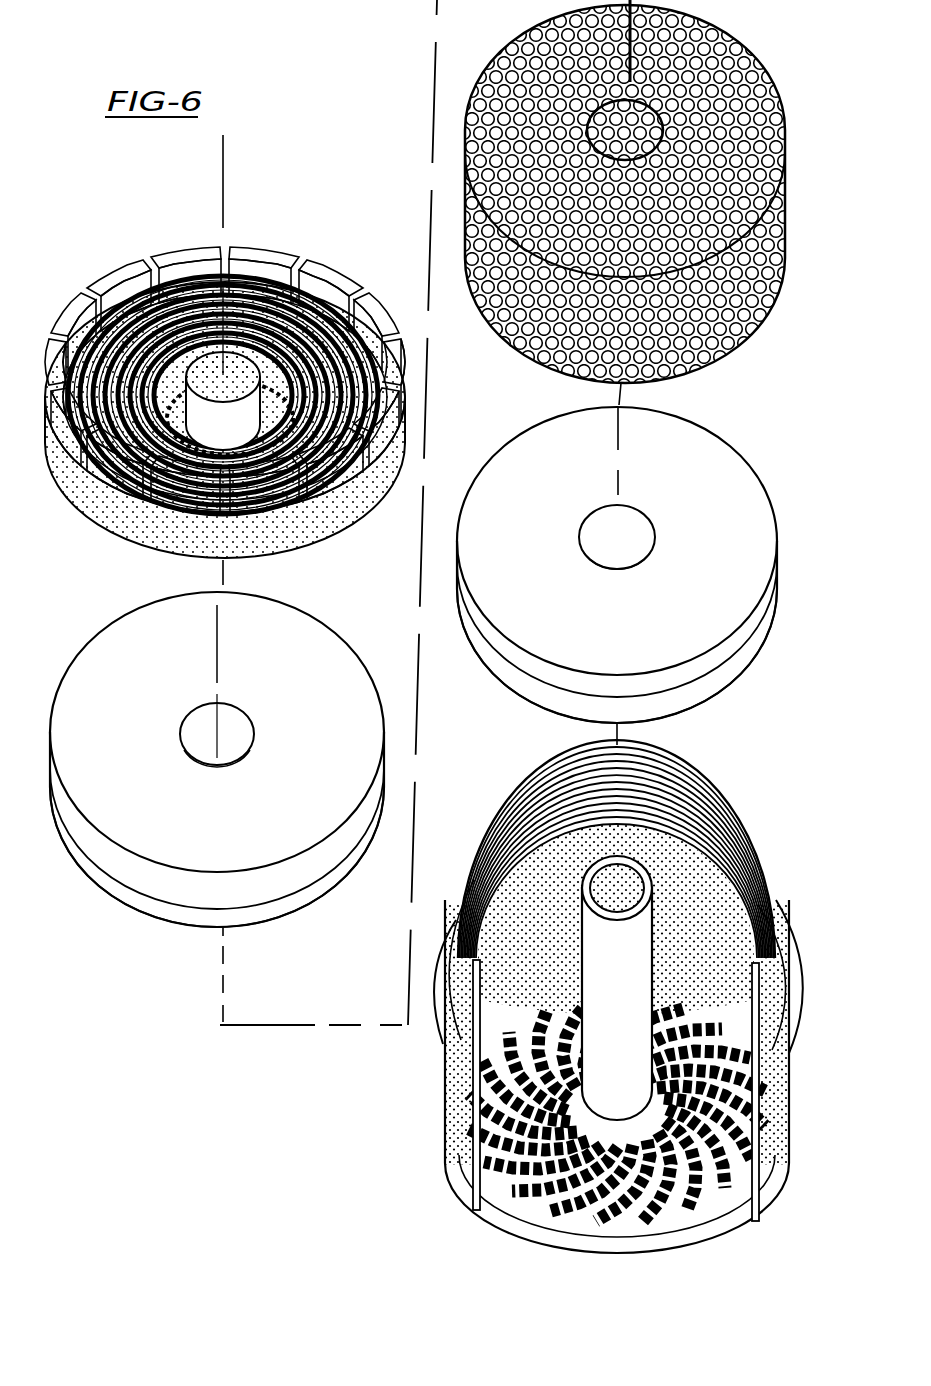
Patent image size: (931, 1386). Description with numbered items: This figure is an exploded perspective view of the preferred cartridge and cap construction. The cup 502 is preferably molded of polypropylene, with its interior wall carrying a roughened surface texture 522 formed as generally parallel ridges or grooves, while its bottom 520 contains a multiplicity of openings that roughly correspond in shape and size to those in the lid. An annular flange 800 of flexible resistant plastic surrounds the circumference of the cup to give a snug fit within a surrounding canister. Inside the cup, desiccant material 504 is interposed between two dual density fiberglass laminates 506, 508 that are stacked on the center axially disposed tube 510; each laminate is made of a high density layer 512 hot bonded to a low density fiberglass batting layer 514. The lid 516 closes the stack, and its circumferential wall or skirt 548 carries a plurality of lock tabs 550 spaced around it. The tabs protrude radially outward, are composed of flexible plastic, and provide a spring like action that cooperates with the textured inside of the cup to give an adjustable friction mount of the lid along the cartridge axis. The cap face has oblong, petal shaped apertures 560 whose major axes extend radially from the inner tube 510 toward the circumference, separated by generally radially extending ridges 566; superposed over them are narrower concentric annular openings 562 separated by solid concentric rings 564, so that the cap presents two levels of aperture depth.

The cup 502 is at (638, 996).
The desiccant material 504 is at (725, 345).
The dual density fiberglass laminate 506 is at (205, 862).
The dual density fiberglass laminate 508 is at (735, 488).
The center axially disposed tube 510 is at (658, 890).
The high density layer 512 is at (163, 910).
The low density fiberglass batting layer 514 is at (110, 862).
The lid 516 is at (229, 237).
The bottom 520 is at (548, 1226).
The roughened surface texture 522 is at (710, 792).
The circumferential wall or skirt 548 is at (167, 538).
The lock tabs 550 is at (72, 318).
The oblong petal shaped apertures 560 is at (168, 400).
The concentric annular openings 562 is at (388, 405).
The solid concentric rings or ridges 564 is at (155, 440).
The radially extending ridges 566 is at (368, 316).
The annular flange 800 is at (793, 897).